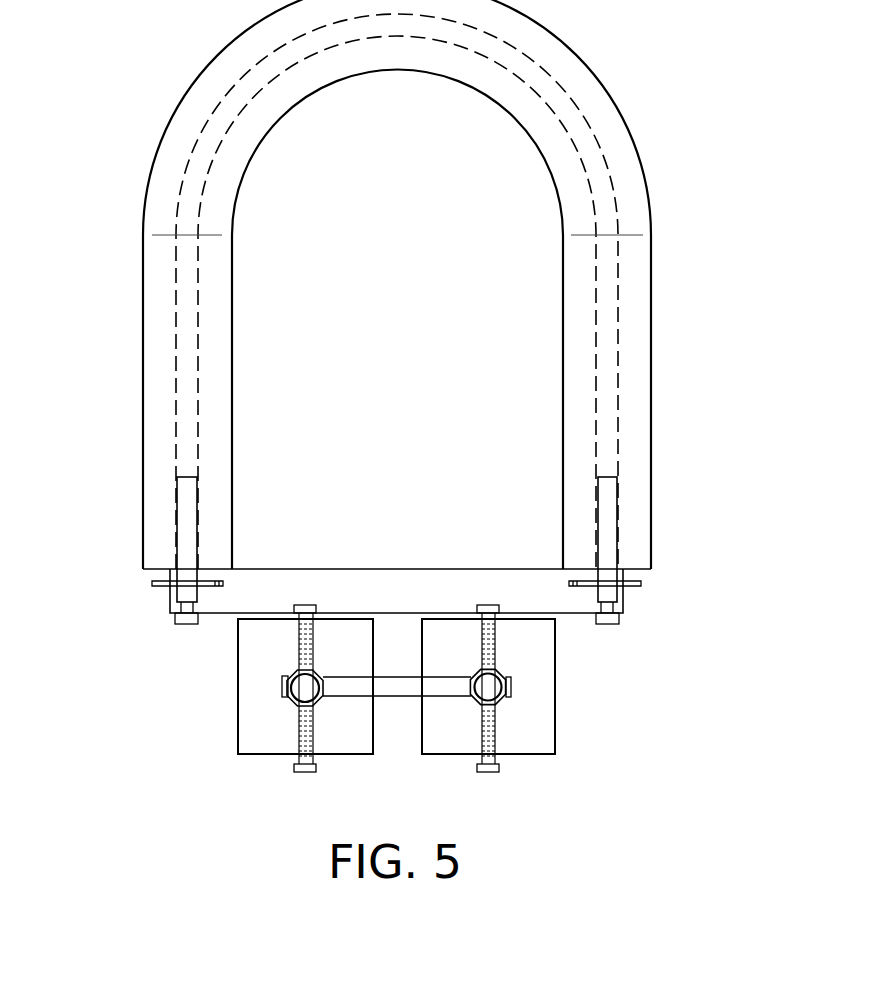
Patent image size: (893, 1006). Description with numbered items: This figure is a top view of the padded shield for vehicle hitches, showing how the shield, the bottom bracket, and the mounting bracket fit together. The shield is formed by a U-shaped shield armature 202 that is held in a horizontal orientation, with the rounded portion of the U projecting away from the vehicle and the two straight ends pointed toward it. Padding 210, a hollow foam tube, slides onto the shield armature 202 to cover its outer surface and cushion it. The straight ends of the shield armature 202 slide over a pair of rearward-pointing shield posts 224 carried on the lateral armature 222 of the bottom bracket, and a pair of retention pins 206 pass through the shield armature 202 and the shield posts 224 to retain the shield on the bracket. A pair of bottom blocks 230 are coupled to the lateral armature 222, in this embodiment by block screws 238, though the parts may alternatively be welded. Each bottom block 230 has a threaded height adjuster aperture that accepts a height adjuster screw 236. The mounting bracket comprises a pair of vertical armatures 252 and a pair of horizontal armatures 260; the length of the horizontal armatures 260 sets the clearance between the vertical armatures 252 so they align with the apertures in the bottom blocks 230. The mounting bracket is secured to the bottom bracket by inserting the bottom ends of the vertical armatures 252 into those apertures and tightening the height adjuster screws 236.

The shield armature 202 is at (617, 283).
The padding 210 is at (635, 138).
The retention pins 206 is at (152, 584).
The lateral armature 222 is at (398, 570).
The shield posts 224 is at (604, 523).
The bottom blocks 230 is at (240, 753).
The height adjuster screw 236 is at (307, 773).
The block screws 238 is at (306, 604).
The vertical armatures 252 is at (300, 689).
The horizontal armatures 260 is at (396, 696).